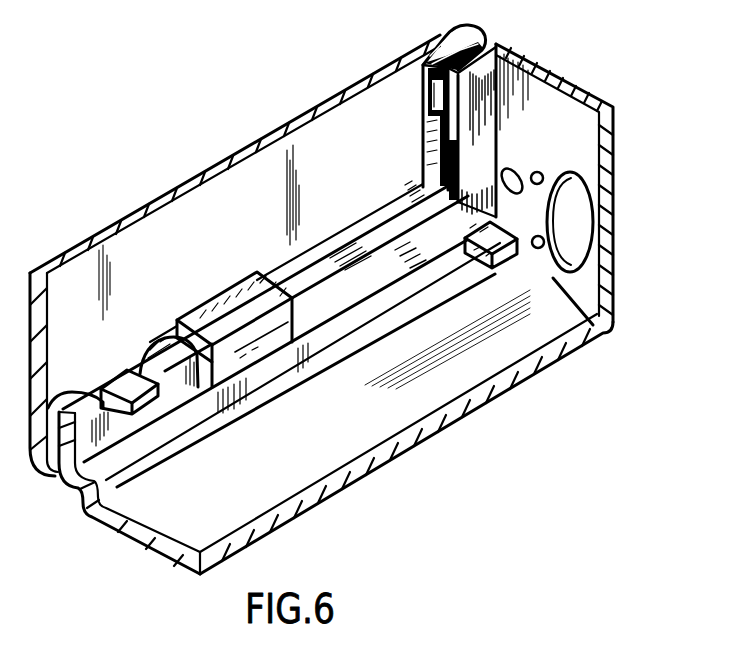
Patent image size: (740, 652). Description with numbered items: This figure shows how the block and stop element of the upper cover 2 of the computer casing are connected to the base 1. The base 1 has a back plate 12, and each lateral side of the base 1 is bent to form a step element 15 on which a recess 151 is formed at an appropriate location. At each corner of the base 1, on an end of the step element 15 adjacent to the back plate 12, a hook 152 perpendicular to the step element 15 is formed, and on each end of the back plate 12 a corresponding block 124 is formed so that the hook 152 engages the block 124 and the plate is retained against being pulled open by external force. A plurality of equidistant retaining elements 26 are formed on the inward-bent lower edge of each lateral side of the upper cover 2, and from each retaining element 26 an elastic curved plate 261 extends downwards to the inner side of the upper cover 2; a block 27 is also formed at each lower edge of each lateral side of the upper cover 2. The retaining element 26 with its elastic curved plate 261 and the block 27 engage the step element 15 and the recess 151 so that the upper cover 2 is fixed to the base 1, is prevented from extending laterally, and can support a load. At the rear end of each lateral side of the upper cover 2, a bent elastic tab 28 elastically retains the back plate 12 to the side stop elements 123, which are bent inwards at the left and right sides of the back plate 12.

The base 1 is at (417, 446).
The upper cover 2 is at (188, 184).
The back plate 12 is at (614, 327).
The step element 15 is at (332, 302).
The retaining element 26 is at (238, 307).
The block 27 is at (140, 370).
The bent elastic tab 28 is at (441, 41).
The stop element 123 is at (480, 117).
The block 124 is at (423, 165).
The recess 151 is at (188, 392).
The hook 152 is at (499, 220).
The elastic curved plate 261 is at (255, 335).